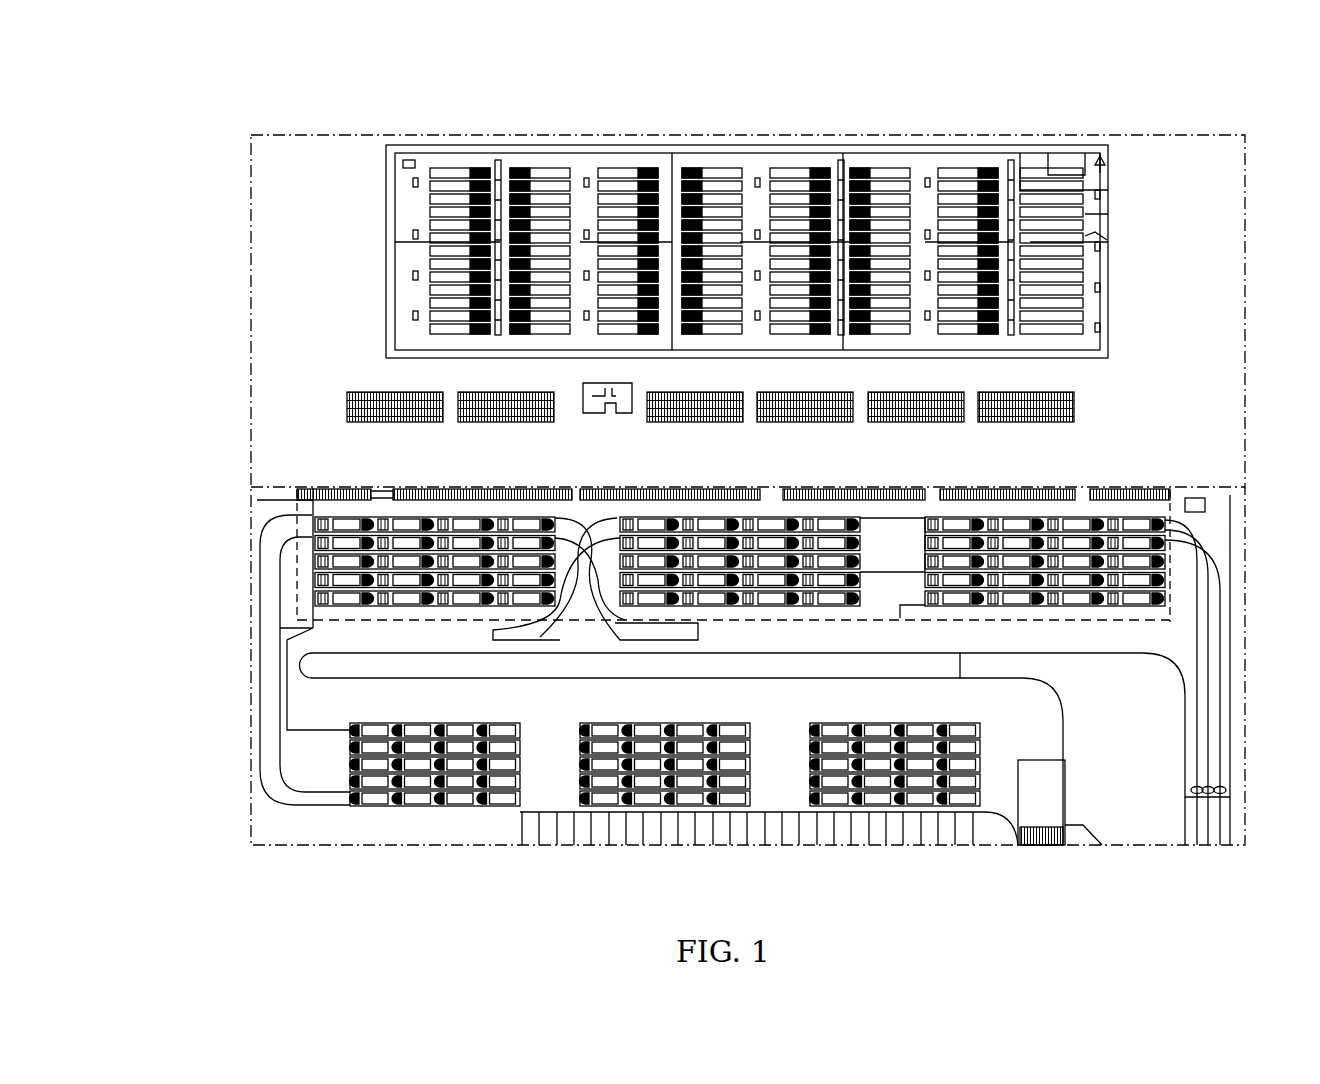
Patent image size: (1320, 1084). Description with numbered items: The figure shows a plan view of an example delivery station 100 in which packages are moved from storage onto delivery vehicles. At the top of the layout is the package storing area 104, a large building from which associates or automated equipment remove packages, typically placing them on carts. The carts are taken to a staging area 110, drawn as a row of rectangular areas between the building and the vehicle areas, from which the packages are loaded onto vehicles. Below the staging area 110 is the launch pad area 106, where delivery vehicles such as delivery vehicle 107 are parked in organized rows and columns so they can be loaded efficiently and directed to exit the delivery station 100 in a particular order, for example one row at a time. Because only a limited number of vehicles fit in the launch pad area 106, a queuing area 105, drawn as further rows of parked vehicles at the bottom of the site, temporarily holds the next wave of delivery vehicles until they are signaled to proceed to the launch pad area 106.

The delivery station 100 is at (225, 75).
The package storing area 104 is at (377, 222).
The queuing area 105 is at (372, 730).
The launch pad area 106 is at (346, 474).
The delivery vehicle 107 is at (418, 522).
The staging area 110 is at (333, 406).